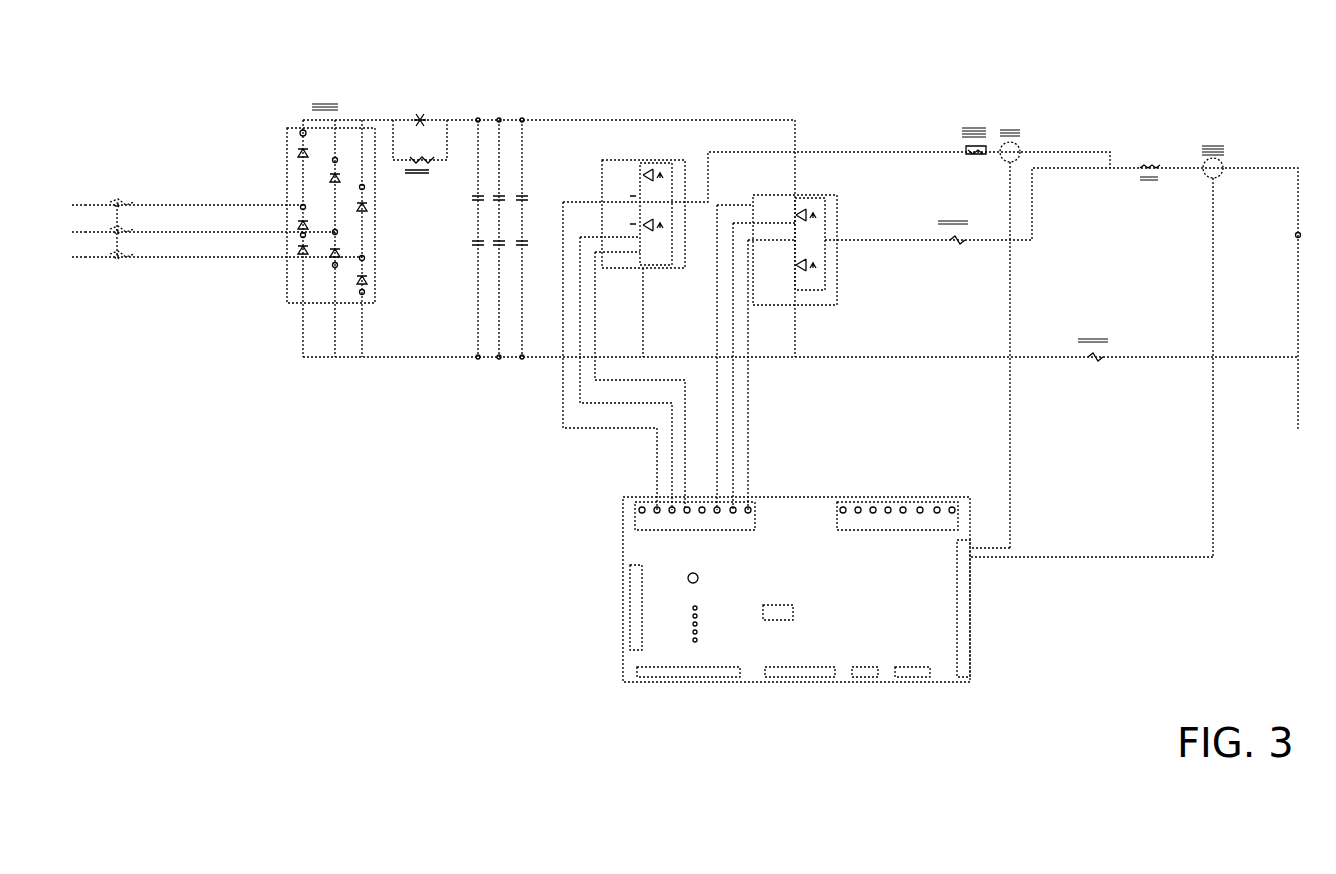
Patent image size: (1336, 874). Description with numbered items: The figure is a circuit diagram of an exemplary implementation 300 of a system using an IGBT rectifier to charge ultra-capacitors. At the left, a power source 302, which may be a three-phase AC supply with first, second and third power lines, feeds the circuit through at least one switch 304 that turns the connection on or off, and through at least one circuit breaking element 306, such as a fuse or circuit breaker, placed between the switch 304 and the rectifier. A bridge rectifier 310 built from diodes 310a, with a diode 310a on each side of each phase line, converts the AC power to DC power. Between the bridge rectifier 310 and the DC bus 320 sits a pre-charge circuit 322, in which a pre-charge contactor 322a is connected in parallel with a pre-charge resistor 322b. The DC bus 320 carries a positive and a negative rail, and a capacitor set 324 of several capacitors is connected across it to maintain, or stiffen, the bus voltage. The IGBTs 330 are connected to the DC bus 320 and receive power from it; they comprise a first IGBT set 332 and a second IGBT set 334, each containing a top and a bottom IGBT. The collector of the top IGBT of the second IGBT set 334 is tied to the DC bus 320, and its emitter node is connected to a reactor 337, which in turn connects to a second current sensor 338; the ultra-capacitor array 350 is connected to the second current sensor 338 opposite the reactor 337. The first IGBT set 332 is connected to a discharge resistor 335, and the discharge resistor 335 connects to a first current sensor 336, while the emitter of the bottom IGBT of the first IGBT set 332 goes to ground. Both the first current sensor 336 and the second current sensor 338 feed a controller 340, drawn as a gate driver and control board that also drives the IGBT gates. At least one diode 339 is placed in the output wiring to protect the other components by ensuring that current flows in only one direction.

The implementation 300 is at (1196, 23).
The power source 302 is at (73, 182).
The switch 304 is at (115, 273).
The circuit breaking element 306 is at (138, 192).
The bridge rectifier 310 is at (295, 118).
The diode 310a is at (317, 178).
The DC bus 320 is at (565, 116).
The pre-charge circuit 322 is at (417, 73).
The pre-charge contactor 322a is at (419, 101).
The pre-charge resistor 322b is at (452, 178).
The capacitor set 324 is at (460, 243).
The IGBTs 330 is at (765, 68).
The first IGBT set 332 is at (663, 153).
The second IGBT set 334 is at (841, 273).
The discharge resistor 335 is at (975, 116).
The first current sensor 336 is at (1010, 108).
The reactor 337 is at (1148, 153).
The second current sensor 338 is at (1213, 133).
The diode 339 is at (953, 207).
The controller 340 is at (621, 569).
The ultra-capacitor array 350 is at (1296, 236).